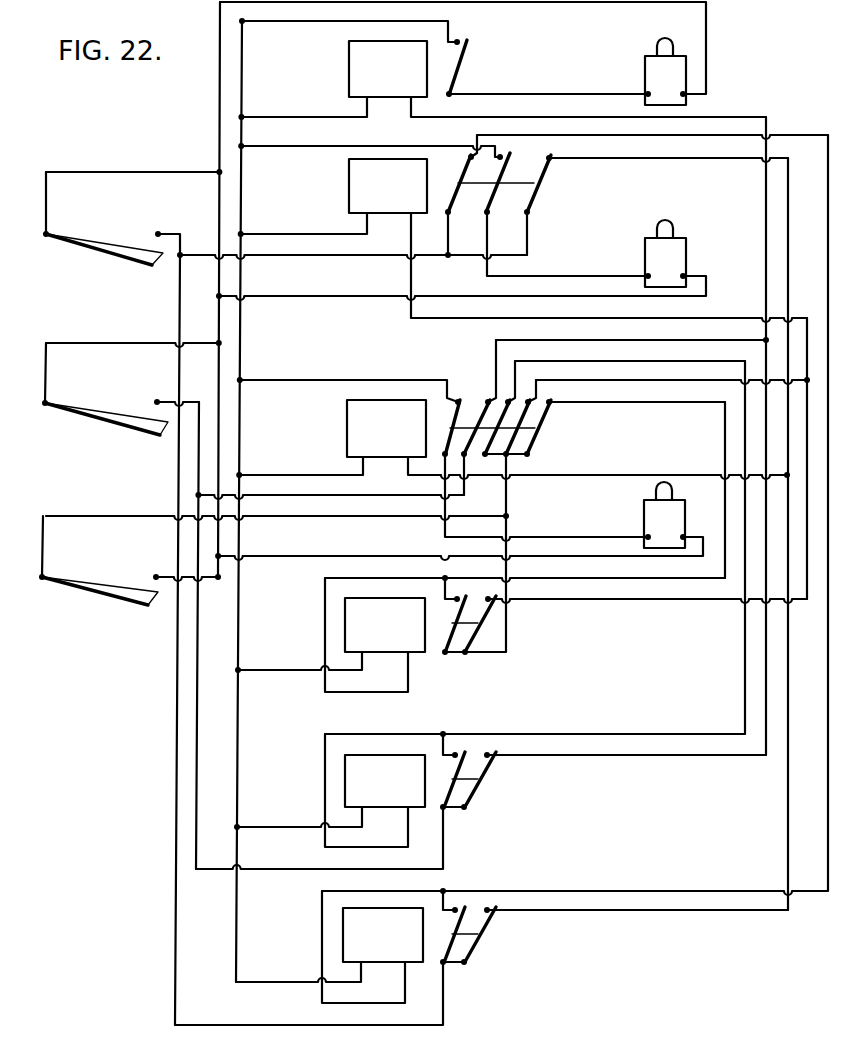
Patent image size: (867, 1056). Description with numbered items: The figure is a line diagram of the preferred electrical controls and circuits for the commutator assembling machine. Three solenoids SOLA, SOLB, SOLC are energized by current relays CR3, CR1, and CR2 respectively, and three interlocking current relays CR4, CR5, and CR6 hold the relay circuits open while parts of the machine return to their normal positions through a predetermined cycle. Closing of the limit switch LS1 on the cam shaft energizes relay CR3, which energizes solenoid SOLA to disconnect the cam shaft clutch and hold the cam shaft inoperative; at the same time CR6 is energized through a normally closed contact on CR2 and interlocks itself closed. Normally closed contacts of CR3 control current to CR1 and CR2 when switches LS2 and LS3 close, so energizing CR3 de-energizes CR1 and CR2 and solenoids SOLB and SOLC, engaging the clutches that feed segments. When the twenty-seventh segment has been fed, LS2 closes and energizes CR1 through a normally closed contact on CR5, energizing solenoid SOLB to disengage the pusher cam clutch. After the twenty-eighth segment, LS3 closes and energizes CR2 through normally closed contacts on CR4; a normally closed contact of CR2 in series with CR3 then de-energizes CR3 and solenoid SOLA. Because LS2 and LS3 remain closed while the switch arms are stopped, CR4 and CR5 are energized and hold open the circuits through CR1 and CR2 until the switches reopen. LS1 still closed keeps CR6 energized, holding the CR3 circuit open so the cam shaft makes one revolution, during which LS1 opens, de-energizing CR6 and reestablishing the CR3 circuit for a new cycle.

The current relay CR1 is at (388, 69).
The current relay CR2 is at (388, 186).
The current relay CR3 is at (386, 428).
The interlocking current relay CR4 is at (385, 625).
The interlocking current relay CR5 is at (385, 781).
The interlocking current relay CR6 is at (383, 935).
The solenoid A SOLA is at (664, 515).
The solenoid B SOLB is at (665, 71).
The solenoid C SOLC is at (665, 253).
The limit switch LS1 is at (99, 218).
The limit switch LS2 is at (102, 389).
The limit switch LS3 is at (95, 560).